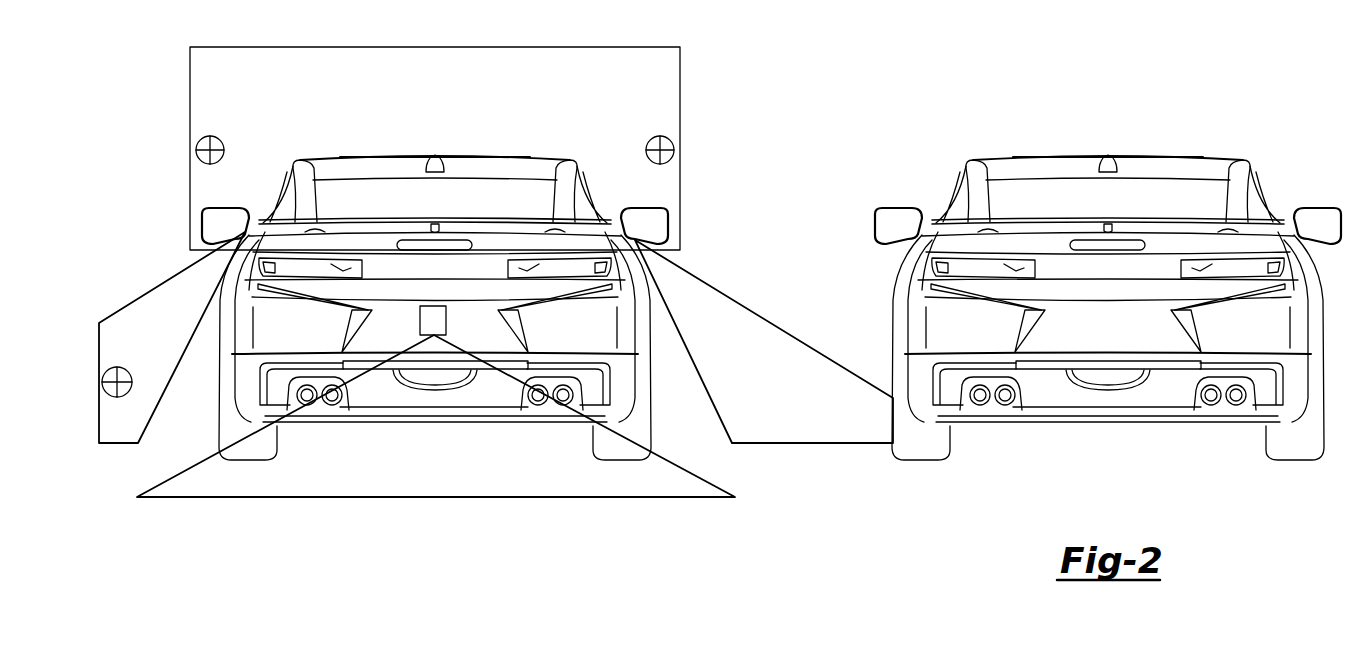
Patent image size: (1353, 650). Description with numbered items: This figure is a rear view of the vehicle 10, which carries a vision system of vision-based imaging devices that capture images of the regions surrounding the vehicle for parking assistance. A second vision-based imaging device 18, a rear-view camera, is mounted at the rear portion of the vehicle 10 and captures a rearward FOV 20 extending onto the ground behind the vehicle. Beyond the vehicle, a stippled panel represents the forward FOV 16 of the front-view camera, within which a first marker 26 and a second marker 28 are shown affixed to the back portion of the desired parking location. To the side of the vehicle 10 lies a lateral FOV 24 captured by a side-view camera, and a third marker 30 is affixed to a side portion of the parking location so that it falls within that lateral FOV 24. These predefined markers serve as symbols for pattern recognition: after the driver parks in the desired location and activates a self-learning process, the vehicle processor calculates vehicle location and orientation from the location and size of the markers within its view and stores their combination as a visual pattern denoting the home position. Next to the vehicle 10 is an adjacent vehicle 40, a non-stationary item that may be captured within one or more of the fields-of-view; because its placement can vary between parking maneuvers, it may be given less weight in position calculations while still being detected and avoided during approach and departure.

The vehicle 10 is at (329, 157).
The forward field-of-view 16 is at (578, 47).
The second vision-based imaging device 18 is at (420, 321).
The rearward field-of-view 20 is at (449, 485).
The lateral field-of-view 24 is at (165, 282).
The first marker 26 is at (197, 141).
The second marker 28 is at (673, 141).
The third marker 30 is at (110, 397).
The adjacent vehicle 40 is at (999, 157).